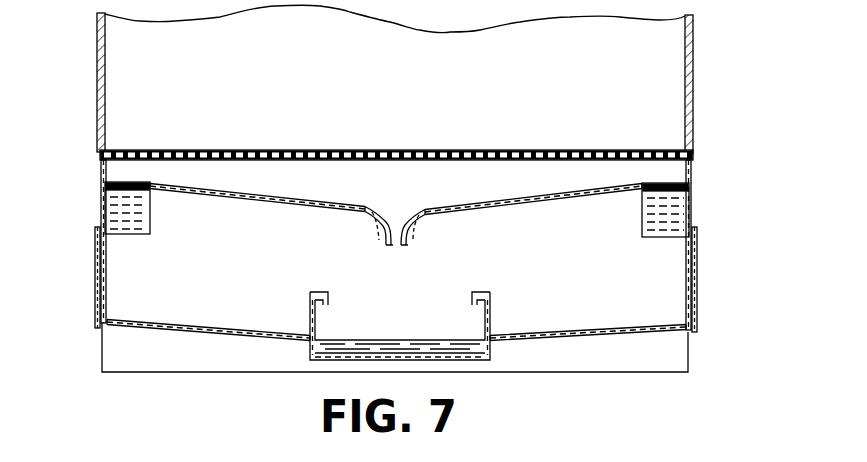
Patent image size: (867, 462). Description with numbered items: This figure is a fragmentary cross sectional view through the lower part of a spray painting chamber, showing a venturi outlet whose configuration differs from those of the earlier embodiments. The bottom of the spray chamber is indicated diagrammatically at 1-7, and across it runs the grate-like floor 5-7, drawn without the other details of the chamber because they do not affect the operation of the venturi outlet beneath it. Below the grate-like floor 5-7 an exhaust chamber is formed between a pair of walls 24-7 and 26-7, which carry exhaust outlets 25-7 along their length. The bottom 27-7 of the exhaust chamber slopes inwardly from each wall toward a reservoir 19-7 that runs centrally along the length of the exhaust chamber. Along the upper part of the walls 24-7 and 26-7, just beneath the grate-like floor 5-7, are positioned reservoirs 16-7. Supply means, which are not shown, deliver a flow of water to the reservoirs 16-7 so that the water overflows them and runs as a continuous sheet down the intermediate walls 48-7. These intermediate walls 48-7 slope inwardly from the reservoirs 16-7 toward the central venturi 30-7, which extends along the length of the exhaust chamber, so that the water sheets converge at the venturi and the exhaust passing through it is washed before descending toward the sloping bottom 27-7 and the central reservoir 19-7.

The bottom of the spray chamber 1-7 is at (105, 128).
The grate-like floor 5-7 is at (282, 150).
The reservoirs 16-7 is at (103, 210).
The intermediate walls 48-7 is at (255, 198).
The central venturi 30-7 is at (467, 266).
The wall 24-7 is at (107, 291).
The wall 26-7 is at (687, 297).
The exhaust outlets 25-7 is at (95, 302).
The bottom of the exhaust chamber 27-7 is at (191, 325).
The reservoir 19-7 is at (456, 348).